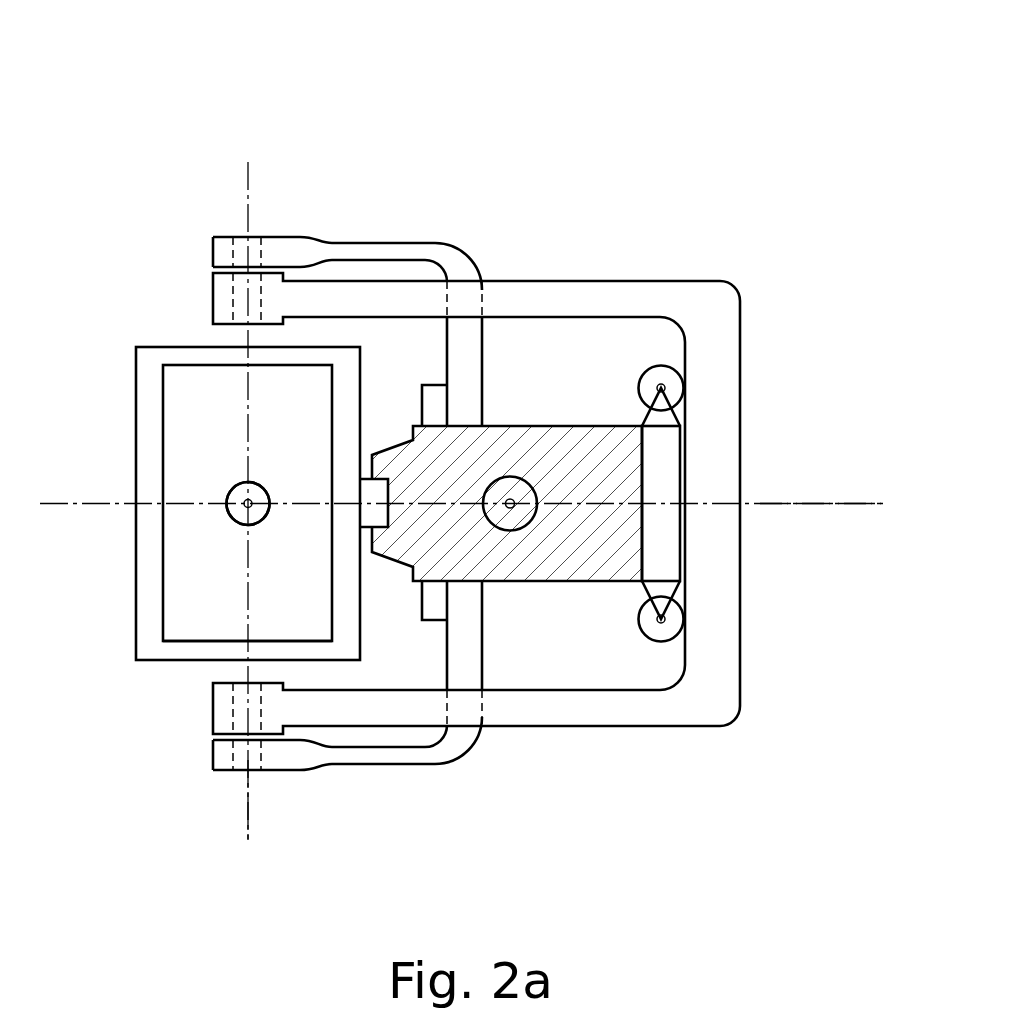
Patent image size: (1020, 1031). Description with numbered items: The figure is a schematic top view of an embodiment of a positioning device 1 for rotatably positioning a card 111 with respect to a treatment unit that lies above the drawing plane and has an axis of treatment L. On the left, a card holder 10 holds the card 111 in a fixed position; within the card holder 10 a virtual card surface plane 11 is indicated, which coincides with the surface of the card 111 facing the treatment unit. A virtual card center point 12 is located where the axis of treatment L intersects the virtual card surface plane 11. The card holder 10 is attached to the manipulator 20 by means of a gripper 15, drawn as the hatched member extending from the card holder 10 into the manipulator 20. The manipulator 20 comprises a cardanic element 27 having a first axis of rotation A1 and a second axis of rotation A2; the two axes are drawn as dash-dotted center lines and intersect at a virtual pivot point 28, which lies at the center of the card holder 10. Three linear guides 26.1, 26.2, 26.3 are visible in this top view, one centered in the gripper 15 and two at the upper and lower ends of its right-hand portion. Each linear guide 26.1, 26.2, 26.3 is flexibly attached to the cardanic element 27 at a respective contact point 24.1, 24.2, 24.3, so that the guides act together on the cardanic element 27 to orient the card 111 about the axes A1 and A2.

The positioning device 1 is at (590, 114).
The card holder 10 is at (148, 397).
The virtual card surface plane 11 is at (197, 393).
The card 111 is at (202, 577).
The virtual card center point 12 is at (237, 505).
The axis of treatment L is at (233, 500).
The virtual pivot point 28 is at (250, 495).
The gripper 15 is at (533, 452).
The manipulator 20 is at (212, 832).
The cardanic element 27 is at (212, 173).
The contact point 24.1 is at (510, 507).
The contact point 24.2 is at (665, 392).
The contact point 24.3 is at (665, 616).
The linear guide 26.1 is at (505, 518).
The linear guide 26.2 is at (657, 366).
The linear guide 26.3 is at (662, 638).
The first axis of rotation A1 is at (248, 790).
The second axis of rotation A2 is at (807, 503).